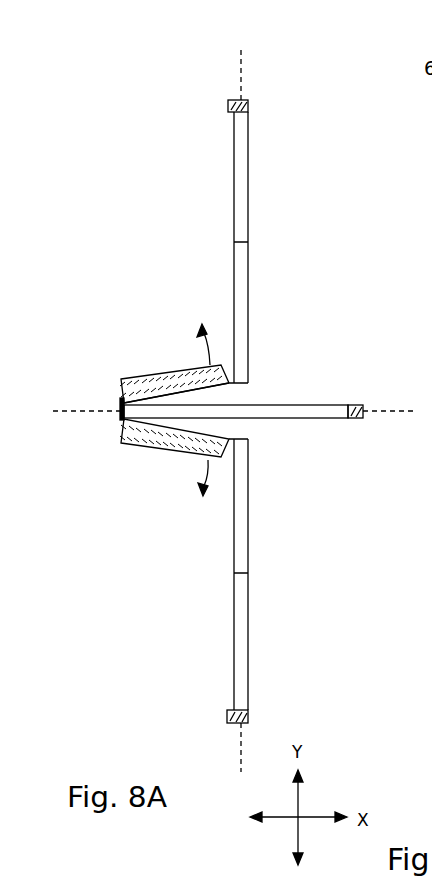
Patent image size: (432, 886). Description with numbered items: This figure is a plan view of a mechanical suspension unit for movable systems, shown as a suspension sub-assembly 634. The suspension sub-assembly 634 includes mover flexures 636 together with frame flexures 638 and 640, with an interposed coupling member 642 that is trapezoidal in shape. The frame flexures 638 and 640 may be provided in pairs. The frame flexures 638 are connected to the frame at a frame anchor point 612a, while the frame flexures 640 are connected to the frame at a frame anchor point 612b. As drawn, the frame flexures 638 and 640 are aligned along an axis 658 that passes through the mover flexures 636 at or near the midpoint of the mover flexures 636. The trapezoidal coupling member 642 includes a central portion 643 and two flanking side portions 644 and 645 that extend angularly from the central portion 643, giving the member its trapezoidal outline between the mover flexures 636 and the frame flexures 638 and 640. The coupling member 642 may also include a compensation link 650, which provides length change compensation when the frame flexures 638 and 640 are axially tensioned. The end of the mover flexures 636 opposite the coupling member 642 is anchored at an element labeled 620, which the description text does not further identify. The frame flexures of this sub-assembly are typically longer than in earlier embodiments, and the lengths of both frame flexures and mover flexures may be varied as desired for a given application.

The suspension sub-assembly 634 is at (138, 275).
The mover flexures 636 is at (297, 417).
The frame flexures 638 is at (233, 590).
The frame flexures 640 is at (234, 253).
The coupling member 642 is at (122, 378).
The central portion 643 is at (122, 401).
The side portion 644 is at (170, 455).
The side portion 645 is at (172, 371).
The compensation link 650 is at (121, 417).
The frame anchor point 612a is at (227, 717).
The frame anchor point 612b is at (228, 107).
The rod anchor 620 is at (357, 420).
The axis 658 is at (242, 80).